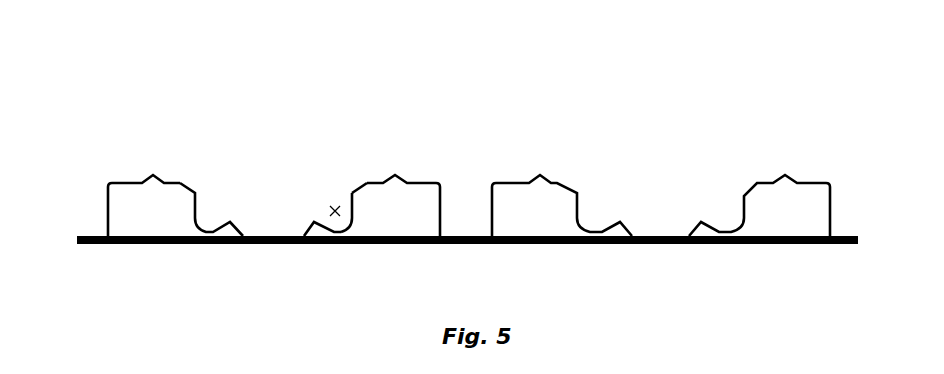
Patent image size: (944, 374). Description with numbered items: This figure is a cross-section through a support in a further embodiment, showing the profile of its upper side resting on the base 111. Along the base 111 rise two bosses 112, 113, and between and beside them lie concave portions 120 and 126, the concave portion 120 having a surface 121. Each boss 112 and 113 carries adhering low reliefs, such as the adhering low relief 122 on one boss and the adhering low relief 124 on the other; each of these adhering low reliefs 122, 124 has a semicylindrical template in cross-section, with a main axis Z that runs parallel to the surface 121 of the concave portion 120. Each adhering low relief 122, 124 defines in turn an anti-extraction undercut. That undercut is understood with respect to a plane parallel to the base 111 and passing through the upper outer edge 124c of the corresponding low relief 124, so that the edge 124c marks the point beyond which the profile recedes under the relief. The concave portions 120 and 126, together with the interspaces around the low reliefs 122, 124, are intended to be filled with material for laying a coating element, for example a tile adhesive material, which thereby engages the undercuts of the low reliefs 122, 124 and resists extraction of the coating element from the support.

The base 111 is at (92, 235).
The boss 112 is at (263, 137).
The boss 113 is at (643, 137).
The concave portion 120 is at (278, 237).
The surface 121 is at (365, 185).
The adhering low relief 122 is at (355, 210).
The adhering low relief 124 is at (193, 226).
The upper outer edge 124c is at (195, 193).
The concave portion 126 is at (640, 200).
The main axis Z is at (333, 205).